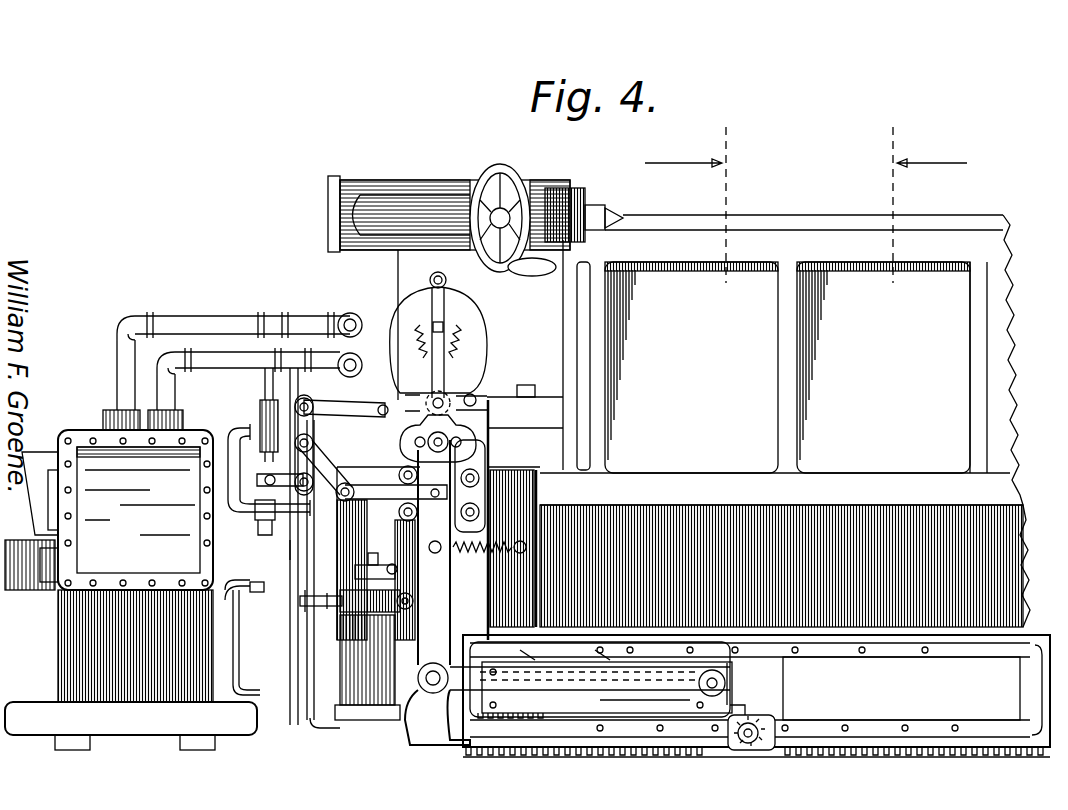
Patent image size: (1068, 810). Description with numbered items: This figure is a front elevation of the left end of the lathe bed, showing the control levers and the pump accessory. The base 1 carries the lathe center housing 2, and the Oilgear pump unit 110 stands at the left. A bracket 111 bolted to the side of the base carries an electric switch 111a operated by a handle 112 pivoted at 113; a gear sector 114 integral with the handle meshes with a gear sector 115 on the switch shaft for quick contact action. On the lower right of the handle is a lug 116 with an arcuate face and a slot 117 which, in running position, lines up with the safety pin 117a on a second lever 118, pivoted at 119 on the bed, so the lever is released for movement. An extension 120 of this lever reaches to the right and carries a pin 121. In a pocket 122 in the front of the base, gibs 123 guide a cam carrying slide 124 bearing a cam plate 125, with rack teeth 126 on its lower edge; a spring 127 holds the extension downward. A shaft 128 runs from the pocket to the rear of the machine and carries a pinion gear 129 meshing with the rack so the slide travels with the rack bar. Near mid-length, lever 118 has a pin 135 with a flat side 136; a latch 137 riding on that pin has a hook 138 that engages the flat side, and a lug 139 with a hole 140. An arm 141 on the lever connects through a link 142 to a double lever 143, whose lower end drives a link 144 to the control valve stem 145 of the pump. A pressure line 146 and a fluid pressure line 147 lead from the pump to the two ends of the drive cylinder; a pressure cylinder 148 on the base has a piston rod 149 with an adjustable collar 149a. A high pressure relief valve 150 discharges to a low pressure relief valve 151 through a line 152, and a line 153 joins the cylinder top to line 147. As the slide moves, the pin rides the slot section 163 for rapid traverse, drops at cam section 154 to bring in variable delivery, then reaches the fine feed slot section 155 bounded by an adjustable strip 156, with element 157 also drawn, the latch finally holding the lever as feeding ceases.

The base 1 is at (803, 237).
The lathe center housing 2 is at (440, 190).
The Oilgear pump unit 110 is at (80, 412).
The bracket 111 is at (390, 382).
The electric switch 111a is at (480, 333).
The handle 112 is at (466, 292).
The pivot 113 is at (458, 382).
The gear sector 114 is at (426, 345).
The gear sector 115 is at (455, 368).
The lug 116 is at (460, 395).
The slot 117 is at (482, 396).
The safety pin 117a is at (478, 400).
The second lever 118 is at (452, 430).
The pivot 119 is at (433, 690).
The extension 120 is at (487, 670).
The pin 121 is at (727, 678).
The pocket 122 is at (877, 672).
The gibs 123 is at (903, 652).
The cam carrying slide 124 is at (775, 683).
The cam plate 125 is at (749, 702).
The rack teeth 126 is at (505, 722).
The spring 127 is at (505, 535).
The shaft 128 is at (730, 742).
The pinion gear 129 is at (770, 736).
The pin 135 is at (437, 500).
The flat side 136 is at (440, 490).
The latch 137 is at (373, 482).
The hook 138 is at (487, 486).
The lug 139 is at (355, 465).
The hole 140 is at (370, 470).
The arm 141 is at (410, 385).
The link 142 is at (350, 405).
The double lever 143 is at (265, 410).
The link 144 is at (245, 512).
The control valve stem 145 is at (229, 450).
The pressure line 146 is at (180, 325).
The fluid pressure line 147 is at (210, 364).
The pressure cylinder 148 is at (362, 668).
The piston rod 149 is at (372, 562).
The adjustable collar 149a is at (395, 606).
The high pressure relief valve 150 is at (262, 420).
The low pressure relief valve 151 is at (250, 588).
The line 152 is at (308, 640).
The line 153 is at (290, 552).
The cam section 154 is at (612, 642).
The fine feed slot section 155 is at (534, 641).
The adjustable strip 156 is at (590, 682).
The slide bar 157 is at (628, 702).
The slot section 163 is at (672, 672).